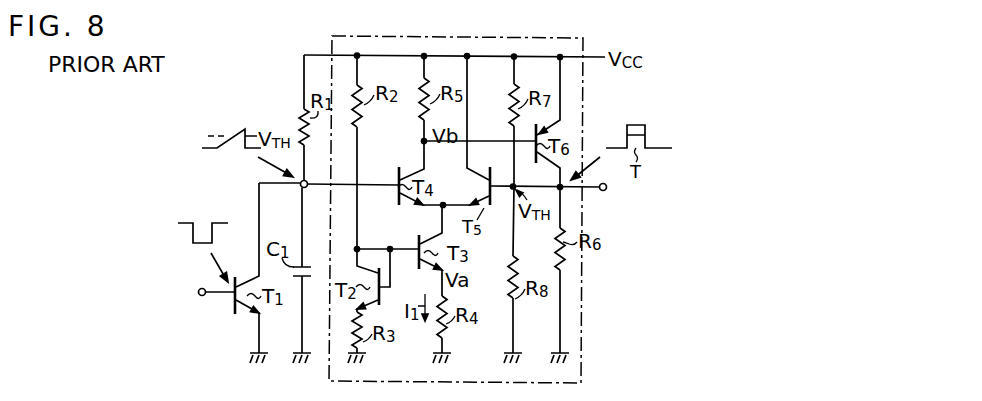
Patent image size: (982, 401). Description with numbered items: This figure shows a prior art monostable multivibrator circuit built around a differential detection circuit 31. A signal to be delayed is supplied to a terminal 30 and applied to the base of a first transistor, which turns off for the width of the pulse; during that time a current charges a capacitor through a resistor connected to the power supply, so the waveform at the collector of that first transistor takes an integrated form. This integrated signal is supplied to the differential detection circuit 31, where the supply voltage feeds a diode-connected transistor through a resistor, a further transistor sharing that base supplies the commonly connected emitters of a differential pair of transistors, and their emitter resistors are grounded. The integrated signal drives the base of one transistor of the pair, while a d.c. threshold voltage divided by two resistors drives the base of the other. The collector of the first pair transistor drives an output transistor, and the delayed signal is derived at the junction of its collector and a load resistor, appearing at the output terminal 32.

The terminal 30 is at (198, 292).
The differential detection circuit 31 is at (383, 36).
The output terminal 32 is at (606, 190).